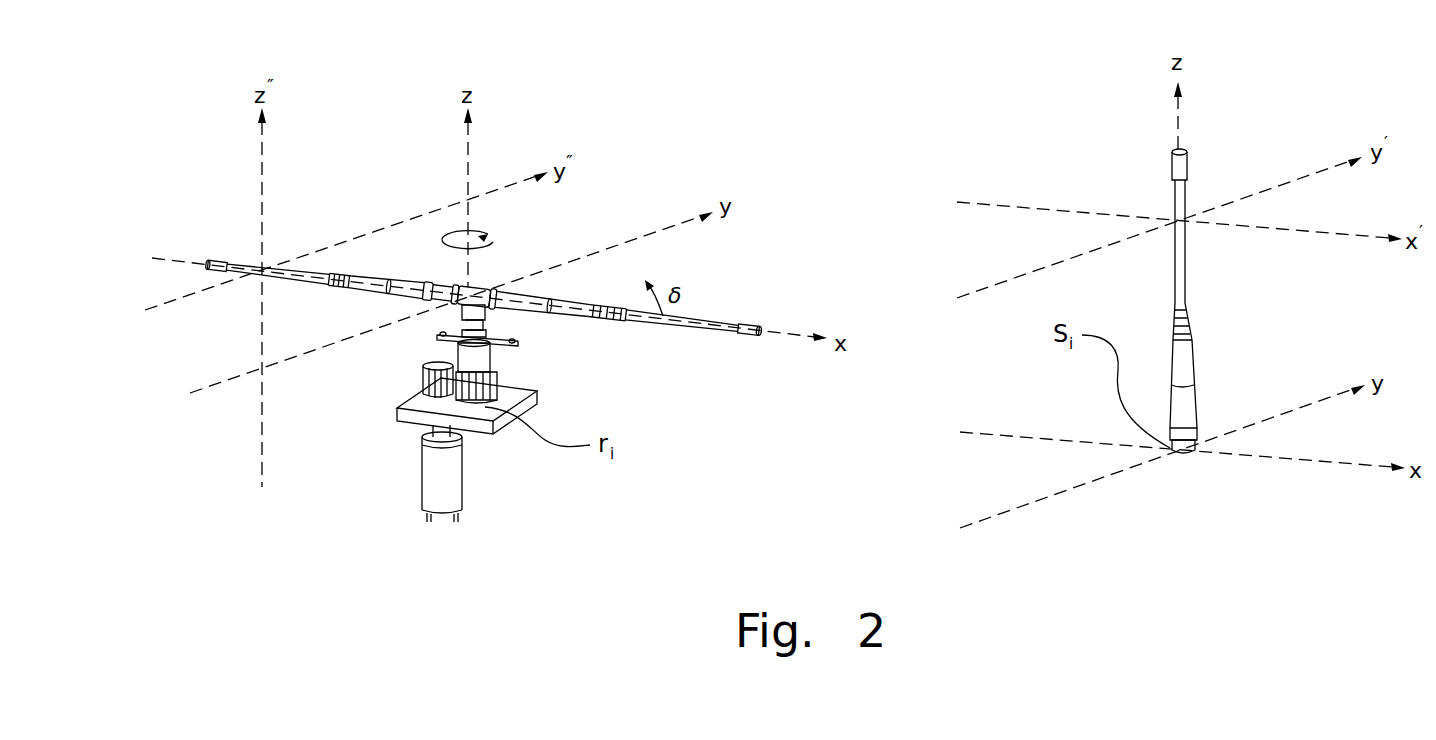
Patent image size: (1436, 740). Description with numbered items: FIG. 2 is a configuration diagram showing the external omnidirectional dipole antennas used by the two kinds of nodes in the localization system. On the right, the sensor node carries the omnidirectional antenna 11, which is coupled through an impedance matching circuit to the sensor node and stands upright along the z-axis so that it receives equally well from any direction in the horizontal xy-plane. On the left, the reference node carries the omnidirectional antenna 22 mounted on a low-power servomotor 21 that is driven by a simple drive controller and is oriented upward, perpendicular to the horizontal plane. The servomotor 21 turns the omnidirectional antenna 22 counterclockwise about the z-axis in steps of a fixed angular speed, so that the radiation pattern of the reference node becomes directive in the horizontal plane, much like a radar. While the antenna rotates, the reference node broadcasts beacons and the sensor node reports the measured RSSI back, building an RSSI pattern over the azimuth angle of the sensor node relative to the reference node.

The omnidirectional antenna 22 is at (284, 277).
The servomotor 21 is at (422, 474).
The omnidirectional antenna 11 is at (1185, 280).